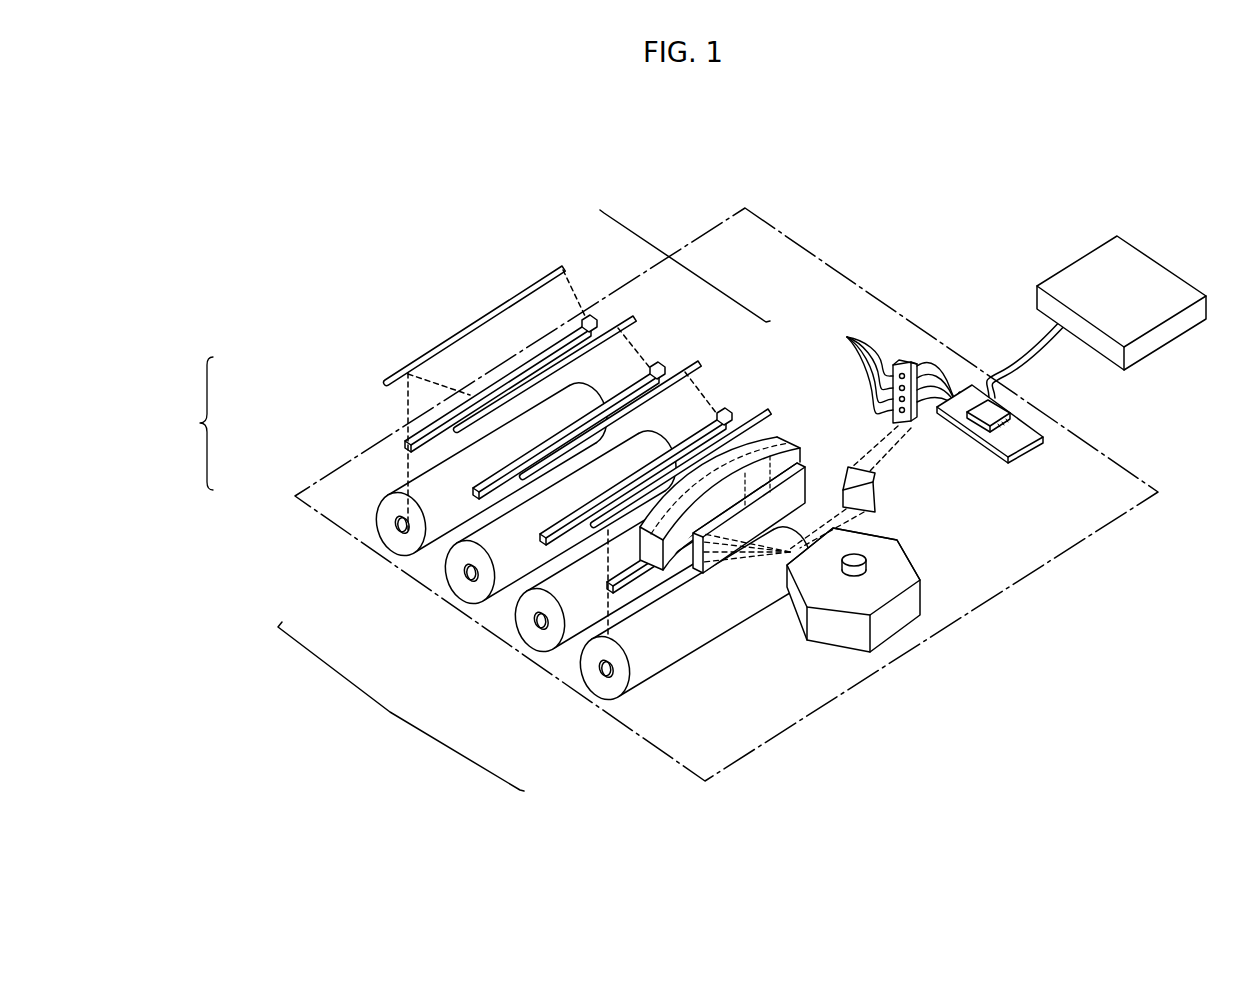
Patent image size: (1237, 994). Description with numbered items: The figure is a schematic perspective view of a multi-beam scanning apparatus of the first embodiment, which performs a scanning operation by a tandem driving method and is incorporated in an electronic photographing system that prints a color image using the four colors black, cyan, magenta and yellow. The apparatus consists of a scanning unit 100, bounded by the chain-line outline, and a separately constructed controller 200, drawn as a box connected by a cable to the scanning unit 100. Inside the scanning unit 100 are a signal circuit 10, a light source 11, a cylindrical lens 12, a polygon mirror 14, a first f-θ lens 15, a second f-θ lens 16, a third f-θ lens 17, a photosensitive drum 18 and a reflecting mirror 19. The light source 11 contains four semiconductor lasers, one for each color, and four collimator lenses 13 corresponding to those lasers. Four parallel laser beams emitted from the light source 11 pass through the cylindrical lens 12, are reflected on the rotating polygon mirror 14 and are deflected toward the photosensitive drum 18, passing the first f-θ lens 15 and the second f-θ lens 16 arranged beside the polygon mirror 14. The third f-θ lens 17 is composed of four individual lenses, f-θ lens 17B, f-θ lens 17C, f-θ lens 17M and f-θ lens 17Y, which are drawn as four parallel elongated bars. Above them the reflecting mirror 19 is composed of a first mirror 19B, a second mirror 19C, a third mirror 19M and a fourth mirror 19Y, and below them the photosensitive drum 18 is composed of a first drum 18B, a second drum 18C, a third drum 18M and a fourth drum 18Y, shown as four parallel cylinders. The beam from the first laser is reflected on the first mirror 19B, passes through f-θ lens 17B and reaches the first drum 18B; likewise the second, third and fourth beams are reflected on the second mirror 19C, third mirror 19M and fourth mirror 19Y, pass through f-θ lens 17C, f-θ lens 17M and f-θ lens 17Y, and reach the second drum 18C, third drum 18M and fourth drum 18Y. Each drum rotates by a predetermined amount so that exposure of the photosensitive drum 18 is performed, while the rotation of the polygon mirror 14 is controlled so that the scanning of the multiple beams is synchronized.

The signal circuit 10 is at (1020, 430).
The light source 11 is at (914, 360).
The cylindrical lens 12 is at (876, 498).
The collimator lenses 13 is at (865, 396).
The polygon mirror 14 is at (898, 620).
The first f-θ lens 15 is at (808, 468).
The second f-θ lens 16 is at (778, 440).
The third f-θ lens 17 is at (495, 507).
The f-θ lens for the fourth semiconductor laser 17Y is at (405, 447).
The f-θ lens for the third semiconductor laser 17M is at (473, 495).
The f-θ lens for the second semiconductor laser 17C is at (540, 540).
The f-θ lens for the first semiconductor laser 17B is at (607, 588).
The photosensitive drum 18 is at (495, 514).
The fourth drum 18Y is at (388, 540).
The third drum 18M is at (462, 582).
The second drum 18C is at (528, 630).
The first drum 18B is at (594, 675).
The reflecting mirror 19 is at (713, 287).
The fourth mirror 19Y is at (564, 268).
The third mirror 19M is at (634, 318).
The second mirror 19C is at (699, 362).
The first mirror 19B is at (769, 409).
The scanning unit 100 is at (781, 207).
The controller 200 is at (1127, 226).